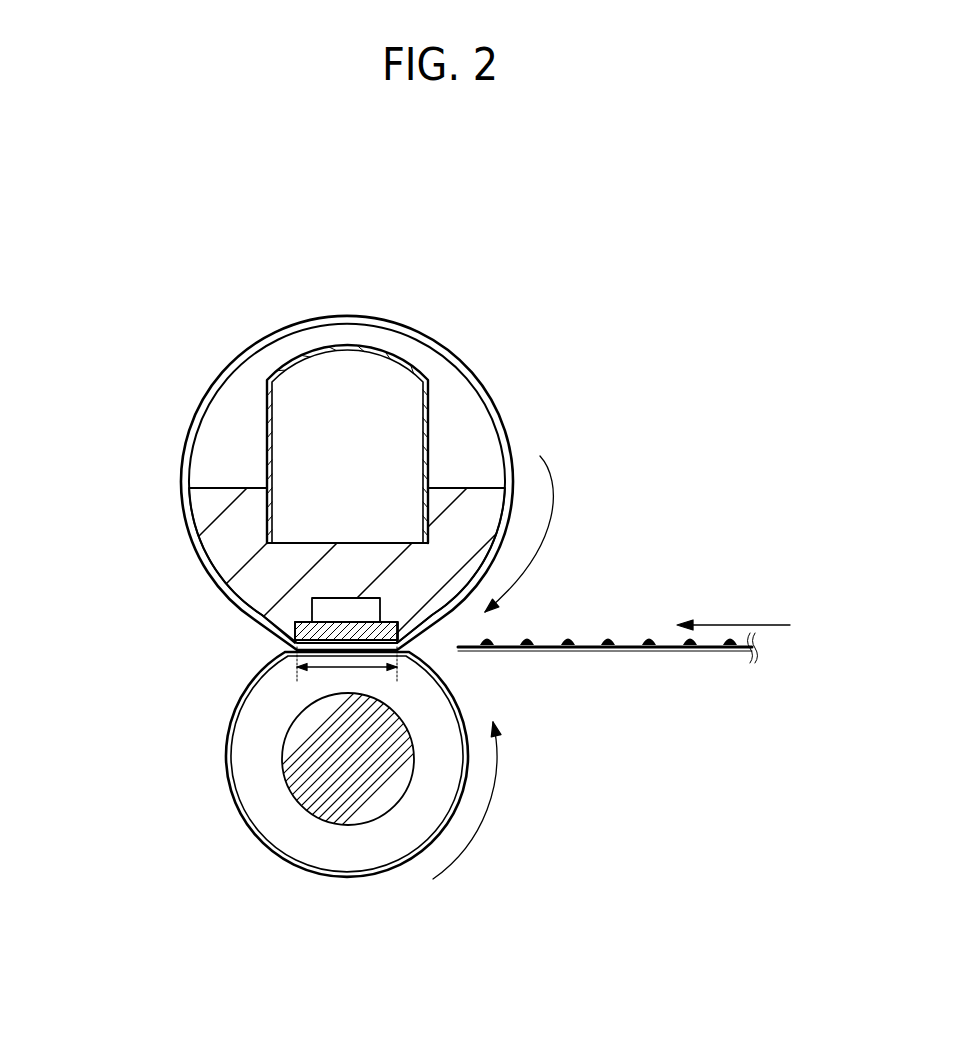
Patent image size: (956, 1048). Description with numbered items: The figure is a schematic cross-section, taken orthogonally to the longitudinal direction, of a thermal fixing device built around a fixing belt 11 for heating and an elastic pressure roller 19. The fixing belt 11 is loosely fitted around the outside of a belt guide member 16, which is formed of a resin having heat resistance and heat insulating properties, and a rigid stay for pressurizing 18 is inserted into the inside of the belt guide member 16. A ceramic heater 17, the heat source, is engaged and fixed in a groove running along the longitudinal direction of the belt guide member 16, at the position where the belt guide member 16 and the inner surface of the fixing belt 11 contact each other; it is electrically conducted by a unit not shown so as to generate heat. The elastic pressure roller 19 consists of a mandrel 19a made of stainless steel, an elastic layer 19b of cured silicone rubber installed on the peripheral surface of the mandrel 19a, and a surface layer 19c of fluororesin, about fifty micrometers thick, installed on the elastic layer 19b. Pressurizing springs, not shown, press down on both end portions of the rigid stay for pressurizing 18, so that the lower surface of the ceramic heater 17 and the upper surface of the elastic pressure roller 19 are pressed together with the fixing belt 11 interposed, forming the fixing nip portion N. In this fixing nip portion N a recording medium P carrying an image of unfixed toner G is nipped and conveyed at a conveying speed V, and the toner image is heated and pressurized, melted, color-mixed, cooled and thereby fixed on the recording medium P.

The fixing belt 11 is at (240, 357).
The belt guide member 16 is at (483, 488).
The ceramic heater 17 is at (307, 633).
The rigid stay for pressurizing 18 is at (267, 452).
The elastic pressure roller 19 is at (283, 764).
The mandrel 19a is at (290, 745).
The elastic layer 19b is at (250, 768).
The surface layer 19c is at (228, 790).
The fixing nip portion N is at (332, 668).
The recording medium P is at (638, 652).
The unfixed toner G is at (608, 638).
The conveying speed V is at (733, 612).